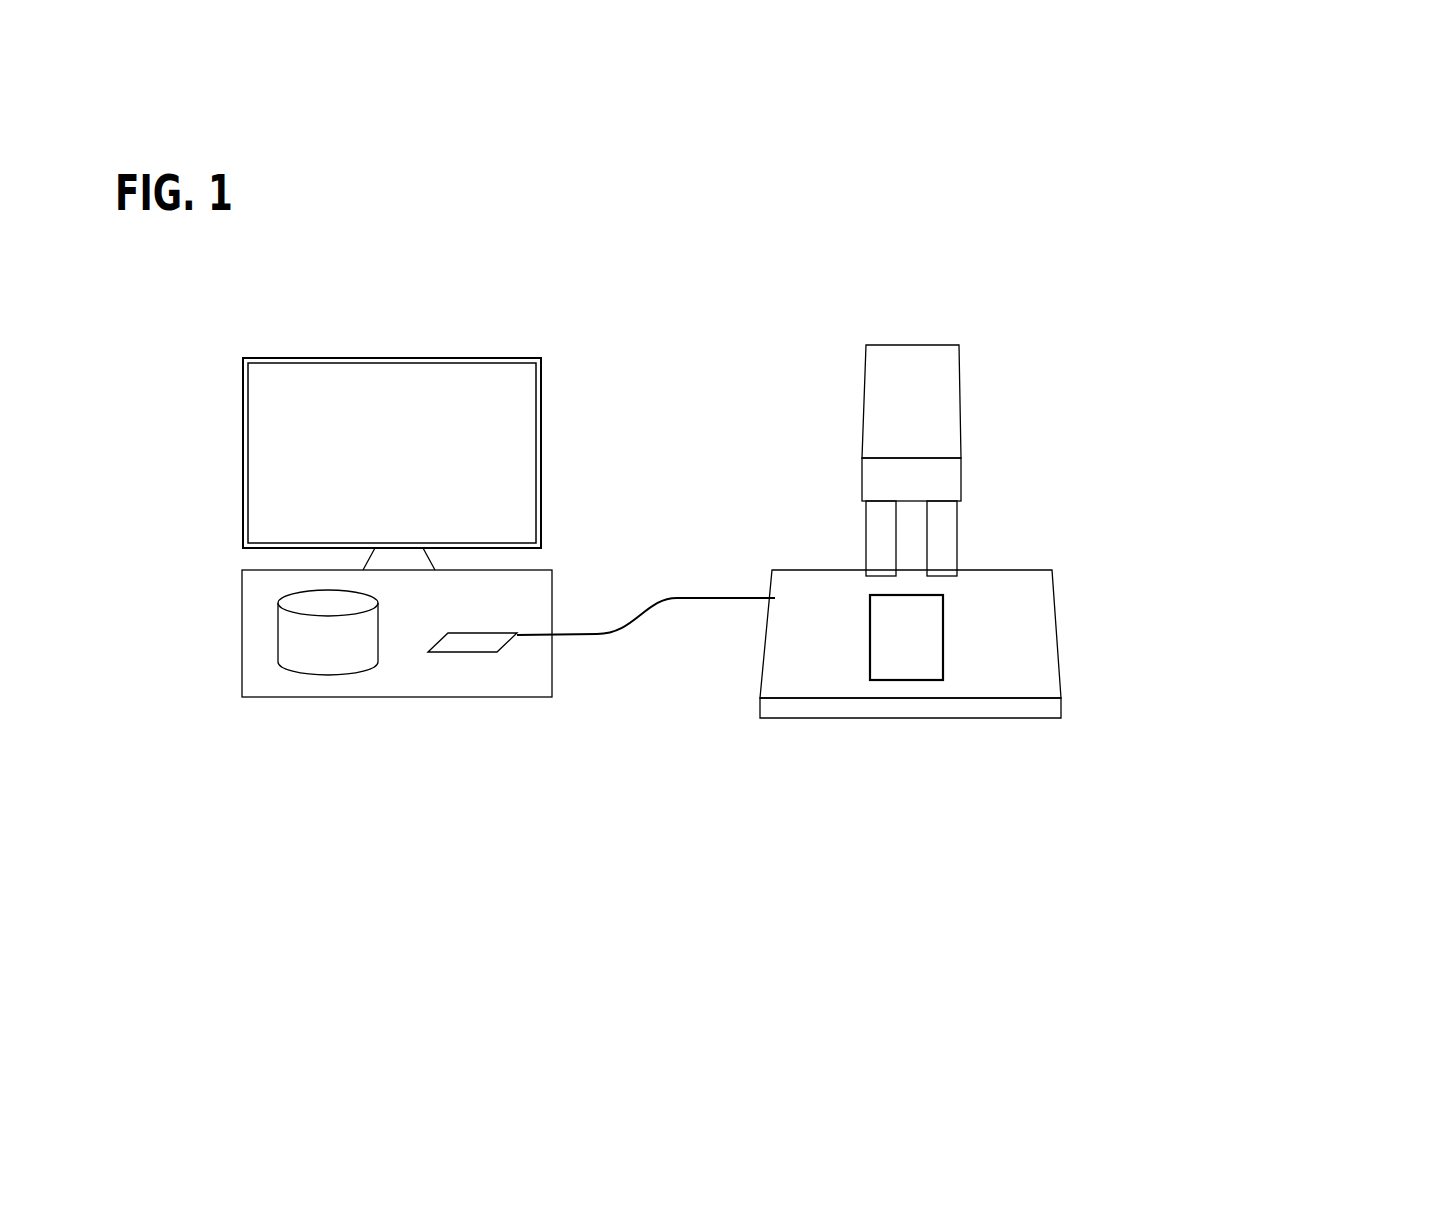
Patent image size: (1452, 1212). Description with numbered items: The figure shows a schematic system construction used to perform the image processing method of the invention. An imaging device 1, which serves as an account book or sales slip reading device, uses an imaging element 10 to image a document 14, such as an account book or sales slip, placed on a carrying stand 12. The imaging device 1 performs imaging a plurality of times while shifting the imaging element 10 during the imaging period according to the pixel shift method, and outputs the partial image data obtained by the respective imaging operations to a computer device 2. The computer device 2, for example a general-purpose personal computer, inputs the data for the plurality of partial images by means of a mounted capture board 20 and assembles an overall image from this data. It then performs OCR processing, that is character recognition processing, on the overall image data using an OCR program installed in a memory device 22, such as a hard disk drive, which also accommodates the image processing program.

The imaging device 1 is at (1104, 511).
The computer device 2 is at (397, 482).
The imaging element 10 is at (945, 490).
The carrying stand 12 is at (817, 678).
The document 14 is at (930, 638).
The capture board 20 is at (477, 655).
The memory device 22 is at (313, 675).